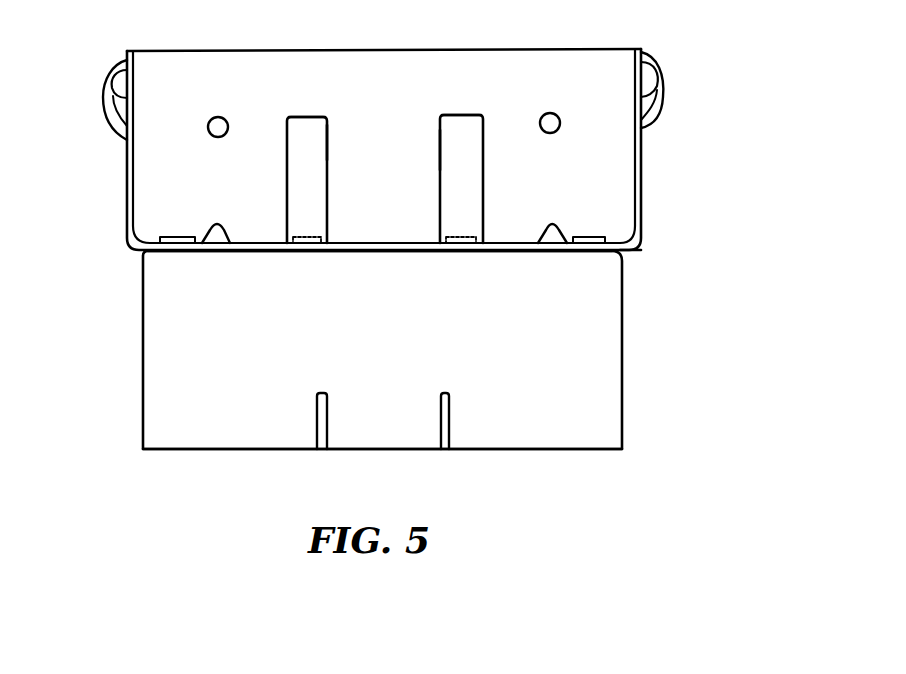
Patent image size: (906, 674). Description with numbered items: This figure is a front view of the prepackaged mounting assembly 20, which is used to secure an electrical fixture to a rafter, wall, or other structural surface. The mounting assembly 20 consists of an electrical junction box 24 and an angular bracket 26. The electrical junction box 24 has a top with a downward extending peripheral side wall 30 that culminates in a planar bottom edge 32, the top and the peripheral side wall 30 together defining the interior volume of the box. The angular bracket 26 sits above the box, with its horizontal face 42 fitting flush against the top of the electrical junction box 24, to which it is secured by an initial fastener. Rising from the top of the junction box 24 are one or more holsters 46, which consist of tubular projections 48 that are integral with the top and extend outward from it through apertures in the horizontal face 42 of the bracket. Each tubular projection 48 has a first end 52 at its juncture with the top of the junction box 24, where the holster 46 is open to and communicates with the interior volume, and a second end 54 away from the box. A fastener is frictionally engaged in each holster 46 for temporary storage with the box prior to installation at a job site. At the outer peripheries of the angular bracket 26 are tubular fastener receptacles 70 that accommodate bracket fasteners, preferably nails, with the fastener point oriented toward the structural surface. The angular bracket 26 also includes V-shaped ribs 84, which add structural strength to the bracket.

The prepackaged mounting assembly 20 is at (413, 252).
The electrical junction box 24 is at (623, 353).
The angular bracket 26 is at (644, 50).
The peripheral side wall 30 is at (385, 350).
The planar bottom edge 32 is at (553, 449).
The horizontal face 42 is at (640, 250).
The holster 46 is at (328, 147).
The tubular projection 48 is at (295, 190).
The first end 52 is at (330, 243).
The second end 54 is at (305, 117).
The tubular fastener receptacle 70 is at (105, 100).
The V-shaped rib 84 is at (226, 250).